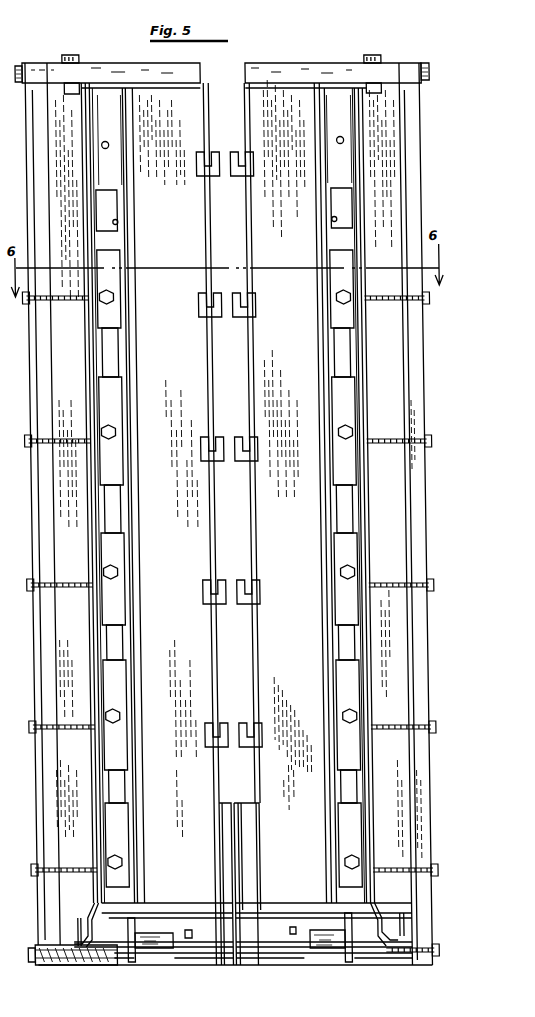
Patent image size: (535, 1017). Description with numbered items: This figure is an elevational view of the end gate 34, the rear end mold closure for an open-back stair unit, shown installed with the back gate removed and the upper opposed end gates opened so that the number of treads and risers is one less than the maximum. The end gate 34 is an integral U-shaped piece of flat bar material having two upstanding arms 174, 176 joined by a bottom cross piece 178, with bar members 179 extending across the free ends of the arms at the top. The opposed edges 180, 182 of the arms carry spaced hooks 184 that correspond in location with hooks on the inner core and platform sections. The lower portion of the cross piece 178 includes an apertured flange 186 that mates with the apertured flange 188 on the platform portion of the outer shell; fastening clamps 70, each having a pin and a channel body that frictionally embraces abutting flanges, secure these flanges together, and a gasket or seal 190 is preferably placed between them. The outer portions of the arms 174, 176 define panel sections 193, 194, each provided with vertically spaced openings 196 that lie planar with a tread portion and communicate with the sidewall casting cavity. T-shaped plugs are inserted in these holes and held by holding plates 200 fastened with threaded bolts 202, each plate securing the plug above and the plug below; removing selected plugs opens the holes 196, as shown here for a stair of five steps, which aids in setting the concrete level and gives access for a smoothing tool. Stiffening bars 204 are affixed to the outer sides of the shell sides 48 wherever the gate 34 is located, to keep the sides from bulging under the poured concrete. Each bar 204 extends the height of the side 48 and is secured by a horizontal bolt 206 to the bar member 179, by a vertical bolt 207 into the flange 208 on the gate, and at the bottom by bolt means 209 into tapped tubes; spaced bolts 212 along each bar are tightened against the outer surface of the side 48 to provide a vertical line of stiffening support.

The end gate 34 is at (239, 981).
The side 48 is at (83, 517).
The fastening clamp 70 is at (146, 957).
The upstanding arm 174 is at (182, 362).
The upstanding arm 176 is at (302, 316).
The bottom cross piece 178 is at (300, 903).
The bar member 179 is at (182, 86).
The opposed edge 180 is at (214, 393).
The opposed edge 182 is at (249, 418).
The hook 184 is at (240, 152).
The apertured flange 186 is at (266, 924).
The apertured flange 188 is at (268, 952).
The gasket means or seal 190 is at (88, 547).
The panel section 193 is at (106, 104).
The panel section 194 is at (338, 101).
The opening 196 is at (116, 222).
The holding plate 200 is at (117, 313).
The threaded bolt 202 is at (110, 294).
The bar 204 is at (31, 372).
The horizontal bolt 206 is at (16, 66).
The vertical bolt 207 is at (70, 55).
The flange 208 is at (64, 95).
The bolt means 209 is at (36, 968).
The bolt 212 is at (27, 598).